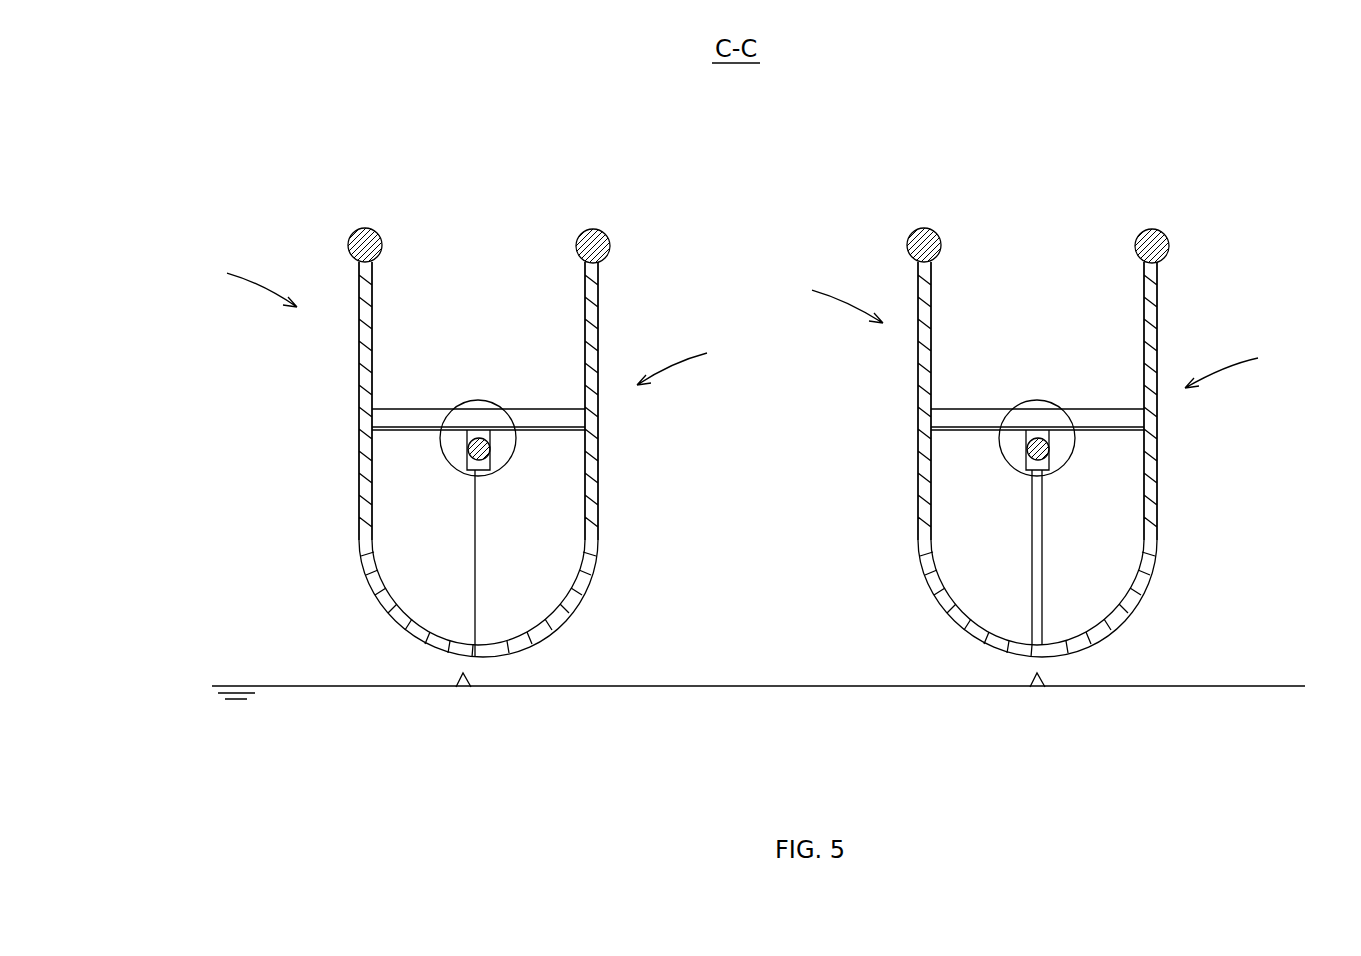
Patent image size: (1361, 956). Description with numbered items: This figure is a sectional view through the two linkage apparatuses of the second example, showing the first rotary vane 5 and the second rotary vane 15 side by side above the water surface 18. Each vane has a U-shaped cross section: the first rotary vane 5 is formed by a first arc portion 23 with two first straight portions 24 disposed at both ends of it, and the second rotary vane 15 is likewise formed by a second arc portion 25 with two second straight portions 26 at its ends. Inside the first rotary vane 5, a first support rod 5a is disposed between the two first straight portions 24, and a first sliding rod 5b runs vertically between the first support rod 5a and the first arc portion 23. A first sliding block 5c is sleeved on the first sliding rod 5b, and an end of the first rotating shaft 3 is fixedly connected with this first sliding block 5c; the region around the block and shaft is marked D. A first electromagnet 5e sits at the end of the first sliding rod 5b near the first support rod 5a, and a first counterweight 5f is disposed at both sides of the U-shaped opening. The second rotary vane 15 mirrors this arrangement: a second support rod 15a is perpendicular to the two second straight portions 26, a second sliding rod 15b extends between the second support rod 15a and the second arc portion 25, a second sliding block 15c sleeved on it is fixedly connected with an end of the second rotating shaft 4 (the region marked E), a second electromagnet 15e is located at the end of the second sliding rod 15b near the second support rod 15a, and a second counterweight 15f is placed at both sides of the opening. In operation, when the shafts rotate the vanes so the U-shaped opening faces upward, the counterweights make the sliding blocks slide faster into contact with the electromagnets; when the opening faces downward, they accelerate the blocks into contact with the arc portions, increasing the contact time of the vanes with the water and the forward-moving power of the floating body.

The first rotating shaft 3 is at (490, 450).
The second rotating shaft 4 is at (1129, 537).
The first rotary vane 5 is at (577, 610).
The first support rod 5a is at (505, 410).
The first sliding rod 5b is at (483, 552).
The first sliding block 5c is at (467, 455).
The first electromagnet 5e is at (467, 427).
The first counterweight 5f is at (365, 230).
The second rotary vane 15 is at (1098, 509).
The second support rod 15a is at (1193, 382).
The second sliding rod 15b is at (937, 453).
The second sliding block 15c is at (905, 401).
The second electromagnet 15e is at (1037, 303).
The second counterweight 15f is at (850, 210).
The water surface 18 is at (303, 683).
The first arc portion 23 is at (463, 685).
The first straight portions 24 is at (467, 316).
The second arc portion 25 is at (1083, 714).
The second straight portions 26 is at (1034, 324).
The detail region D is at (457, 415).
The detail region E is at (1014, 413).